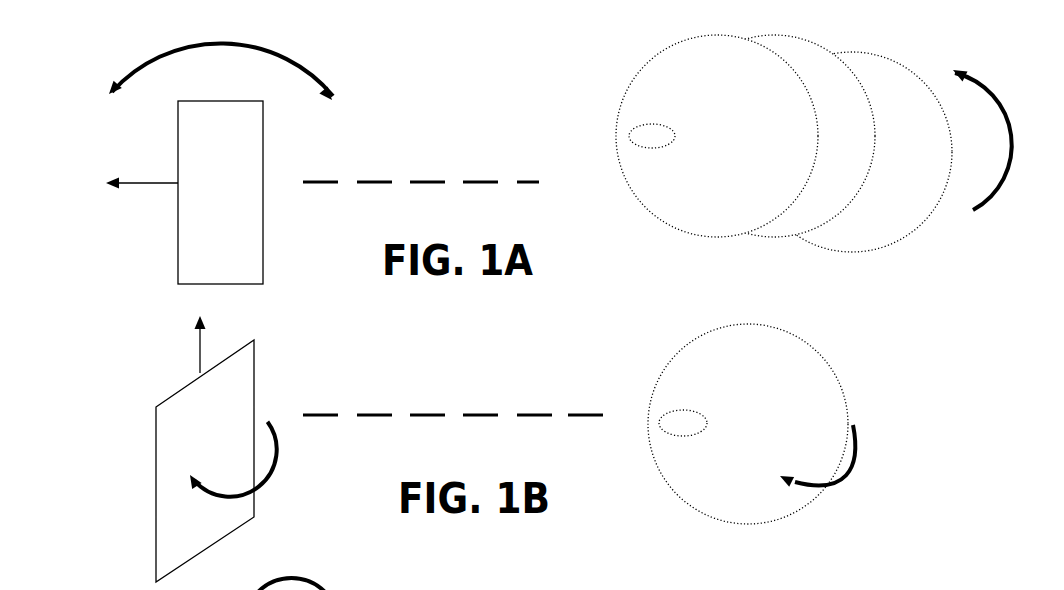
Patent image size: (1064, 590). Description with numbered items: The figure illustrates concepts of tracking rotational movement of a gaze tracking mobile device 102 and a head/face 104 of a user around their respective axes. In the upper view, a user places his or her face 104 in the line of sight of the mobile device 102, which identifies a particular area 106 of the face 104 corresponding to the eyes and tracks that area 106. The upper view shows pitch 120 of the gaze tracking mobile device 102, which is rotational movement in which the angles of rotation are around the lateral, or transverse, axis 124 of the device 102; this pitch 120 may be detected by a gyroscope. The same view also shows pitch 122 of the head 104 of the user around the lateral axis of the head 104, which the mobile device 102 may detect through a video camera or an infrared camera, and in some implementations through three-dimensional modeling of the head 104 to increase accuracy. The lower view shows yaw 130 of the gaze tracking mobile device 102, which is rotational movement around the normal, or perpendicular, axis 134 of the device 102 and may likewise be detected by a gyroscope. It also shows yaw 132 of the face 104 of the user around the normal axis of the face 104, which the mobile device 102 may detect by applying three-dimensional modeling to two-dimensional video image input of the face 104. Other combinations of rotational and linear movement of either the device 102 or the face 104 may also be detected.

In FIG. 1A, the gaze tracking mobile device 102 is at (237, 224).
In FIG. 1B, the gaze tracking mobile device 102 is at (218, 505).
In FIG. 1A, the head/face of the user 104 is at (627, 98).
In FIG. 1B, the head/face of the user 104 is at (820, 352).
In FIG. 1A, the particular area of the face 106 is at (630, 137).
In FIG. 1A, the pitch of the gaze tracking mobile device 120 is at (298, 73).
In FIG. 1A, the pitch of the head 122 is at (981, 212).
In FIG. 1A, the lateral axis 124 is at (150, 183).
In FIG. 1B, the yaw of the gaze tracking mobile device 130 is at (280, 458).
In FIG. 1B, the yaw of the face/head 132 is at (848, 480).
In FIG. 1B, the normal axis 134 is at (200, 353).